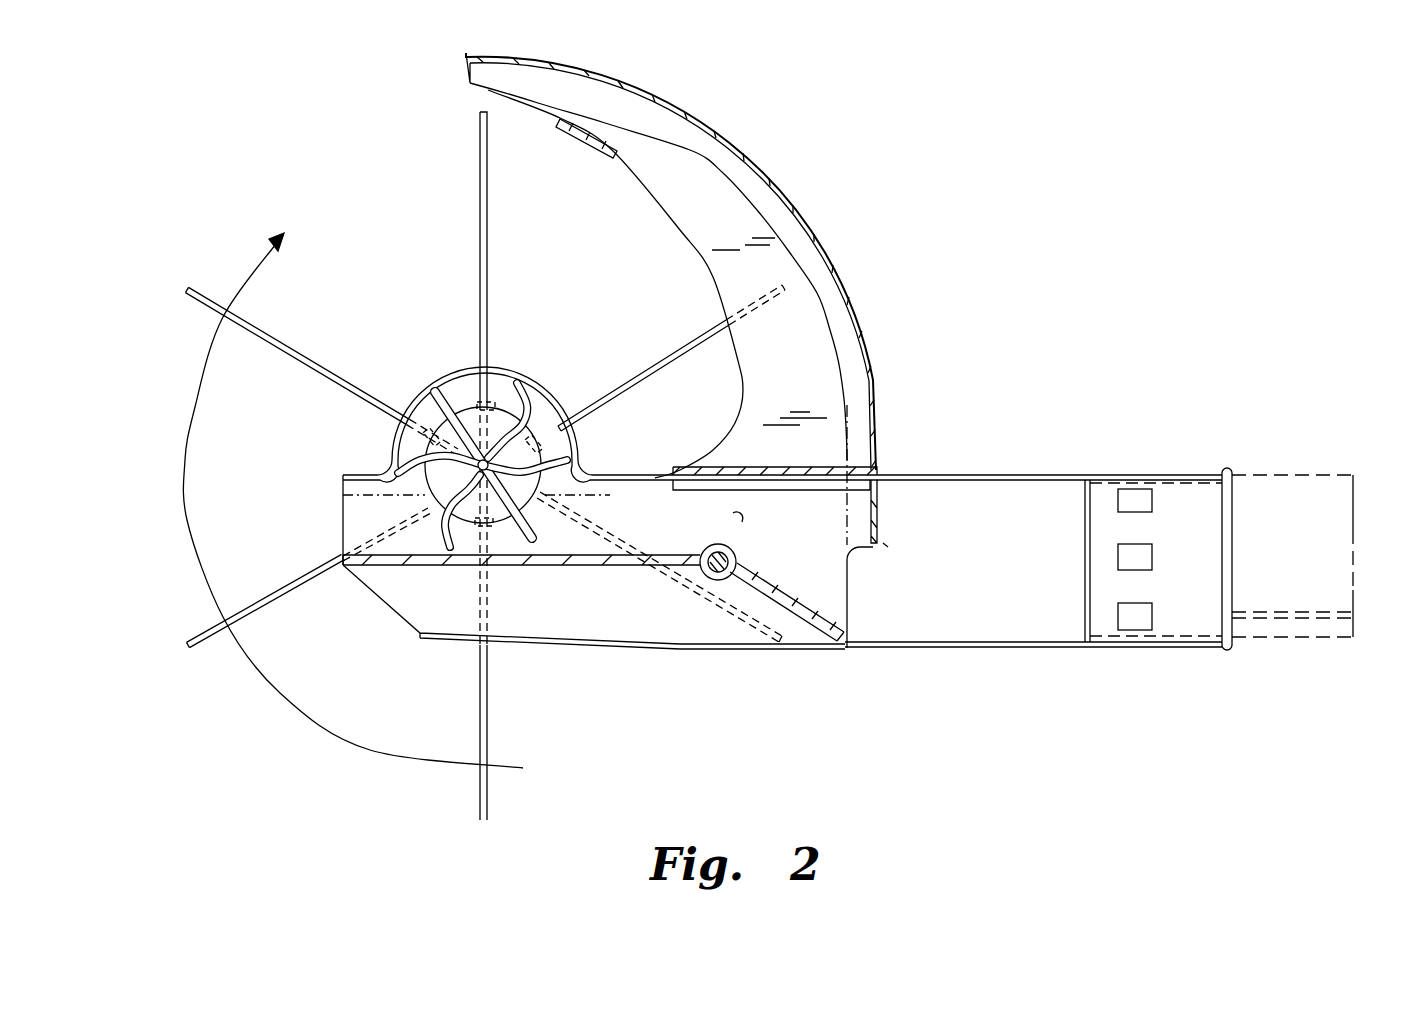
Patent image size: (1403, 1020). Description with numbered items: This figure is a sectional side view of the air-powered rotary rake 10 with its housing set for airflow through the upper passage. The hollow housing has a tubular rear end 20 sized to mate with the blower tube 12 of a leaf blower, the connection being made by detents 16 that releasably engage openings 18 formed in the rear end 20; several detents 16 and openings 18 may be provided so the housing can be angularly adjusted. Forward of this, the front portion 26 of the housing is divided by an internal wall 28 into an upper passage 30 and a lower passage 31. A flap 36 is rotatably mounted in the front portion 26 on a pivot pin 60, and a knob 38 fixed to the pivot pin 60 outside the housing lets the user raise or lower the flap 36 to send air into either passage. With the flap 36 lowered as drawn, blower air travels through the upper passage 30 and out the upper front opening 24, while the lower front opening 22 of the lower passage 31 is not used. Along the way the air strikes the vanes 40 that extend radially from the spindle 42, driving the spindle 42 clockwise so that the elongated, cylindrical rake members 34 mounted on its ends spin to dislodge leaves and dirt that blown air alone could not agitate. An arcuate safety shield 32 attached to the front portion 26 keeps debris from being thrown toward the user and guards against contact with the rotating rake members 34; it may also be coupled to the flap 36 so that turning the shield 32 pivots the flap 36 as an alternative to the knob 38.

The air-powered rotary rake 10 is at (1018, 273).
The blower tube 12 is at (1300, 480).
The detents 16 is at (1160, 495).
The openings 18 is at (1113, 490).
The rear end 20 is at (1265, 662).
The lower front opening 22 is at (380, 617).
The upper front opening 24 is at (347, 513).
The front portion 26 is at (322, 526).
The internal wall 28 is at (520, 567).
The upper passage 30 is at (630, 518).
The lower passage 31 is at (584, 607).
The safety shield 32 is at (750, 157).
The rake members 34 is at (478, 178).
The flap 36 is at (838, 612).
The knob 38 is at (745, 543).
The vanes 40 is at (527, 383).
The spindle 42 is at (466, 388).
The pivot pin 60 is at (703, 551).